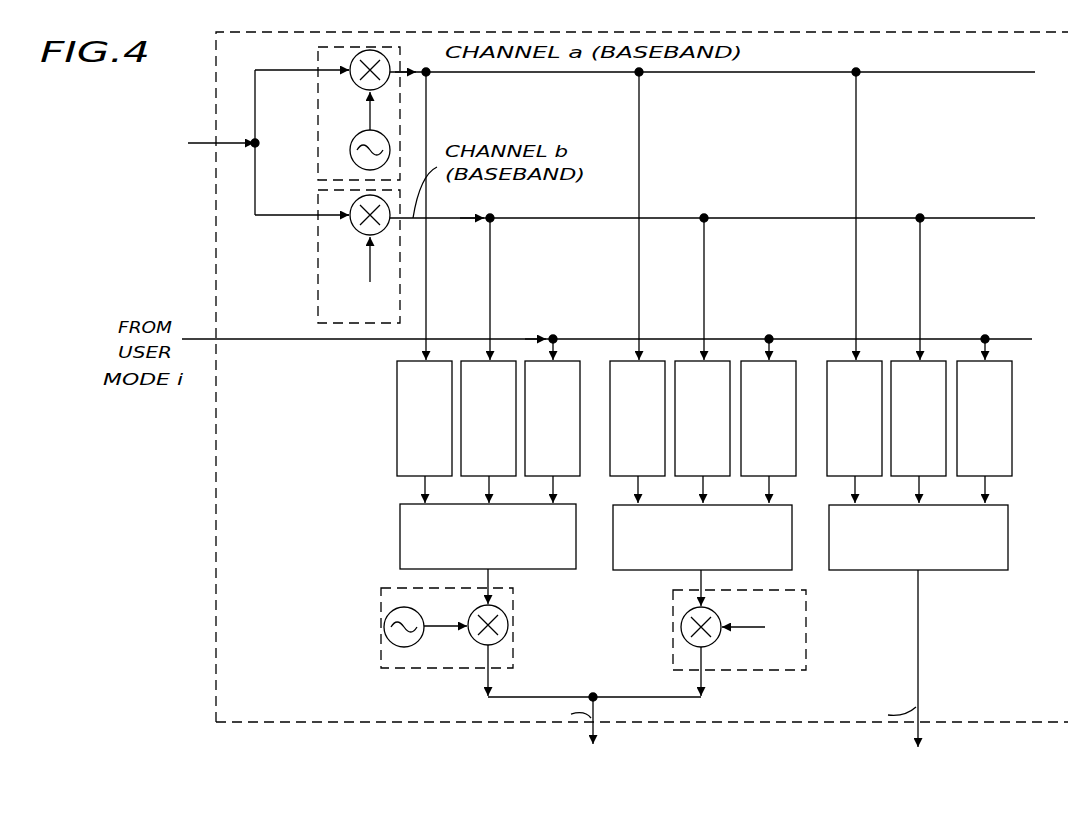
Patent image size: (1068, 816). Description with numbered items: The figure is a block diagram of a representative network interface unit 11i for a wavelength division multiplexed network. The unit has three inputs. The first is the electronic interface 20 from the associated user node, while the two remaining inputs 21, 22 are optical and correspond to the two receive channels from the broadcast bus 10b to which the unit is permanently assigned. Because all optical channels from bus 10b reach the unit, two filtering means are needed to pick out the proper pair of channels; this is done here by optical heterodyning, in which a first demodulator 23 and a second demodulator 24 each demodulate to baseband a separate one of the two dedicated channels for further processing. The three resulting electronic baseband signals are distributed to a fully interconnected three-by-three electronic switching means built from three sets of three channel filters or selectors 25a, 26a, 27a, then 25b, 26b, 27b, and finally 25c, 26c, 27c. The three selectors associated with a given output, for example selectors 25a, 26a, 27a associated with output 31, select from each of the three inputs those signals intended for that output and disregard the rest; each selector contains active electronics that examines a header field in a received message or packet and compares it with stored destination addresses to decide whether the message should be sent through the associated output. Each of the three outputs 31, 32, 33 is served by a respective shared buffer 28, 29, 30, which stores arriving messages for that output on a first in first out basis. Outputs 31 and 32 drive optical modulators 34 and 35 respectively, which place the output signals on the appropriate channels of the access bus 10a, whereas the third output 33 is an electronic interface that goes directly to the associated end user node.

The bus 10a is at (619, 712).
The bus 10b is at (154, 162).
The network interface unit 11i is at (642, 377).
The electronic interface 20 is at (276, 337).
The optical input 21 is at (437, 52).
The optical input 22 is at (415, 218).
The first demodulator 23 is at (318, 152).
The second demodulator 24 is at (318, 232).
The channel filter 25a is at (397, 427).
The channel filter 26a is at (470, 360).
The channel filter 27a is at (533, 360).
The channel filter 25b is at (618, 360).
The channel filter 26b is at (725, 360).
The channel filter 27b is at (786, 360).
The channel filter 25c is at (867, 360).
The channel filter 26c is at (934, 360).
The channel filter 27c is at (1002, 360).
The shared buffer 28 is at (572, 569).
The shared buffer 29 is at (783, 570).
The shared buffer 30 is at (951, 572).
The output 31 is at (490, 577).
The output 32 is at (699, 578).
The output 33 is at (916, 607).
The optical modulator 34 is at (381, 643).
The optical modulator 35 is at (806, 660).